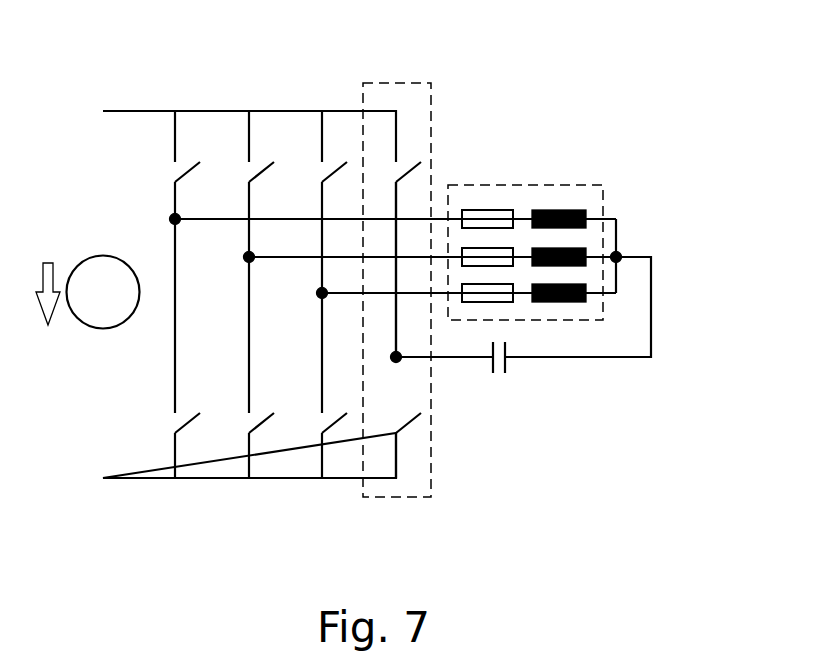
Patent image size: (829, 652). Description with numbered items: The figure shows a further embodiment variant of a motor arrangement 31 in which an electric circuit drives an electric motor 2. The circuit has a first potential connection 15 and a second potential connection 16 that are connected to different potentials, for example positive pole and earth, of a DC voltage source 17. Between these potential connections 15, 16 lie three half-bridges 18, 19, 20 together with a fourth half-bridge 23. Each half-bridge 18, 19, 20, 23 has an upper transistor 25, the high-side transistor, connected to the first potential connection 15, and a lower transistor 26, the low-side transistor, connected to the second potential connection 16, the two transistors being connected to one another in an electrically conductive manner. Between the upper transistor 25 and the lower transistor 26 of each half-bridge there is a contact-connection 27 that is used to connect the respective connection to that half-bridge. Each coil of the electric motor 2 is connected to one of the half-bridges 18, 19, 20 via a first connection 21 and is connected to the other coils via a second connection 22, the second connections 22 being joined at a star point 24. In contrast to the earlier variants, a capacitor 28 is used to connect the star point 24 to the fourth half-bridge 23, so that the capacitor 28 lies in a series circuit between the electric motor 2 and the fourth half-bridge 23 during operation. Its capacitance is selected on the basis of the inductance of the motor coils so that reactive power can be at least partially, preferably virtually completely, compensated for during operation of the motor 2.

The electric motor 2 is at (581, 167).
The first potential connection 15 is at (141, 110).
The second potential connection 16 is at (153, 480).
The DC voltage source 17 is at (88, 318).
The half-bridge 18 is at (177, 492).
The half-bridge 19 is at (250, 492).
The half-bridge 20 is at (325, 492).
The first connection 21 is at (279, 97).
The second connection 22 is at (603, 220).
The fourth half-bridge 23 is at (418, 498).
The star point 24 is at (621, 257).
The upper transistor 25 is at (276, 165).
The lower transistor 26 is at (277, 417).
The contact-connection 27 is at (178, 223).
The capacitor 28 is at (497, 376).
The motor arrangement 31 is at (455, 101).